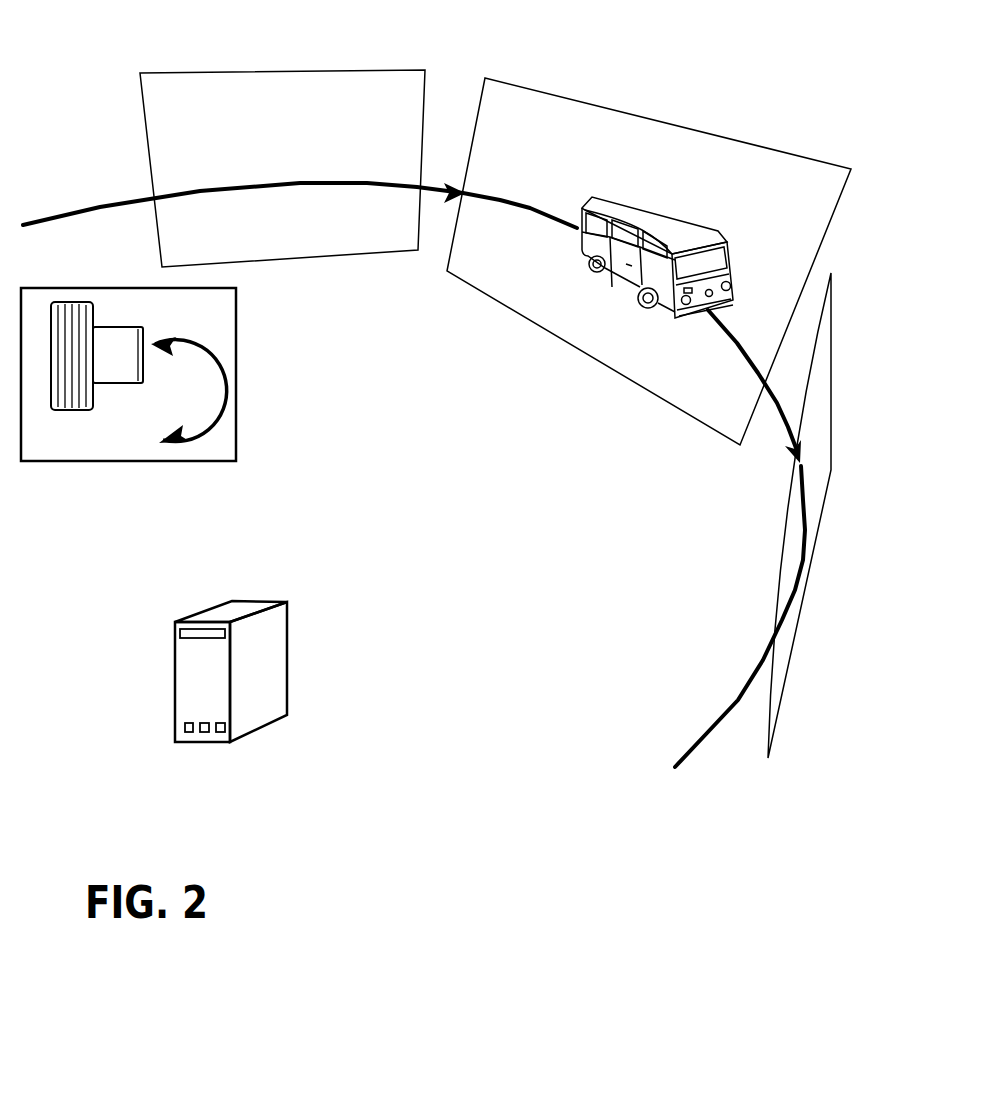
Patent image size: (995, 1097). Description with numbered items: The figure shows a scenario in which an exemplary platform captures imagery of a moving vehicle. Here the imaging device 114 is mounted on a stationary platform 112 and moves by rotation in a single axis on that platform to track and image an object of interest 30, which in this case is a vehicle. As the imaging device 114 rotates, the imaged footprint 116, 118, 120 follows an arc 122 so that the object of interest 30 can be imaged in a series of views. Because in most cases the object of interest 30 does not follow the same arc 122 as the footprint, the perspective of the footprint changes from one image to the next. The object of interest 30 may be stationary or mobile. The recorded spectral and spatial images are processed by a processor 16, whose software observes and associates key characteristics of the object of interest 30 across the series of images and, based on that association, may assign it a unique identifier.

The imaged footprint 116 is at (238, 70).
The imaged footprint 118 is at (602, 108).
The imaged footprint 120 is at (797, 648).
The arc 122 is at (707, 740).
The object of interest 30 is at (663, 217).
The stationary platform 112 is at (77, 461).
The imaging device 114 is at (118, 383).
The processor 16 is at (294, 658).